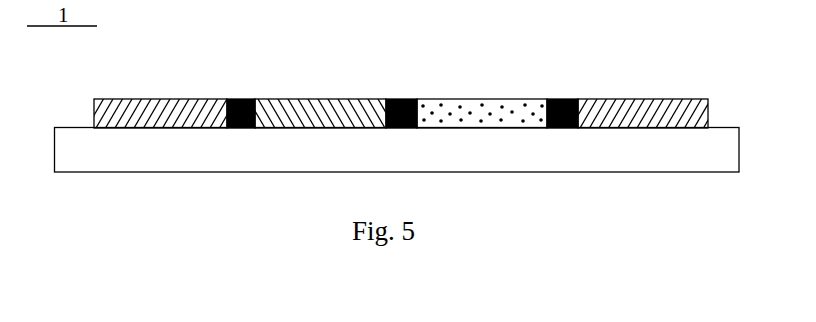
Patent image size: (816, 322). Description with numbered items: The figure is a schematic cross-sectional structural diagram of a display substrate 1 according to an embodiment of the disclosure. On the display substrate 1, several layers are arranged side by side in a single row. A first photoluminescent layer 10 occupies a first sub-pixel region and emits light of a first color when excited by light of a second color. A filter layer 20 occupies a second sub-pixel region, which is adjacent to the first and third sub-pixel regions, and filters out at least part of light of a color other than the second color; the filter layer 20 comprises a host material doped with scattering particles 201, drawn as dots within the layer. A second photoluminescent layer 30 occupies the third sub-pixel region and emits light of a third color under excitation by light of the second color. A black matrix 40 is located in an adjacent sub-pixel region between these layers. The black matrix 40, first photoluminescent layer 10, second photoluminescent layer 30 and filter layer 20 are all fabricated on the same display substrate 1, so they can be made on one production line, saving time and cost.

The display substrate 1 is at (397, 150).
The first photoluminescent layer 10 is at (162, 112).
The filter layer 20 is at (505, 102).
The scattering particles 201 is at (448, 113).
The second photoluminescent layer 30 is at (300, 112).
The black matrix 40 is at (246, 99).